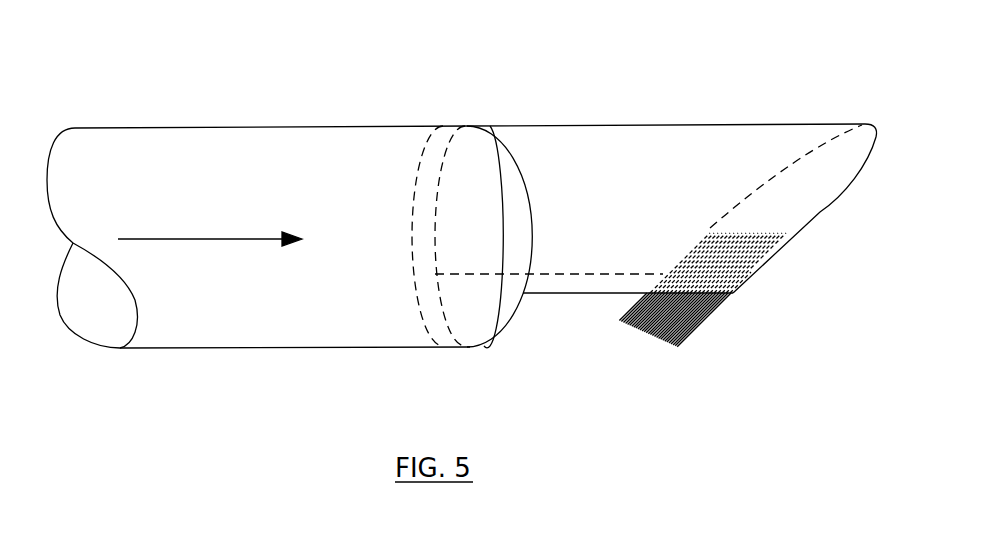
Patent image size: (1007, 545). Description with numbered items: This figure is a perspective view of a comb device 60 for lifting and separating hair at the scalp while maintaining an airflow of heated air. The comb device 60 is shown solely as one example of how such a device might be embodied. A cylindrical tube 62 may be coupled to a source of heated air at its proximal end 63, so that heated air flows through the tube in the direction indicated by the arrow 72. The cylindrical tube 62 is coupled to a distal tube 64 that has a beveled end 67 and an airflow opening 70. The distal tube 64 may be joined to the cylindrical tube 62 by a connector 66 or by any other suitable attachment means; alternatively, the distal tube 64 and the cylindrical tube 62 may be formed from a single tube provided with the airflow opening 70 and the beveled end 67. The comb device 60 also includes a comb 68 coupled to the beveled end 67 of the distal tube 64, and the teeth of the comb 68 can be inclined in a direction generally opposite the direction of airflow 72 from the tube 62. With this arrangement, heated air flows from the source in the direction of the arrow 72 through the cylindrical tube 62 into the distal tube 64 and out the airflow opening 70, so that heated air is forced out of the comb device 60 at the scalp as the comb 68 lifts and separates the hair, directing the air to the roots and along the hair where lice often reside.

The comb device 60 is at (375, 90).
The cylindrical tube 62 is at (295, 348).
The proximal end 63 is at (105, 348).
The distal tube 64 is at (667, 125).
The connector 66 is at (485, 140).
The beveled end 67 is at (820, 208).
The comb 68 is at (723, 297).
The airflow opening 70 is at (575, 293).
The arrow 72 is at (247, 239).